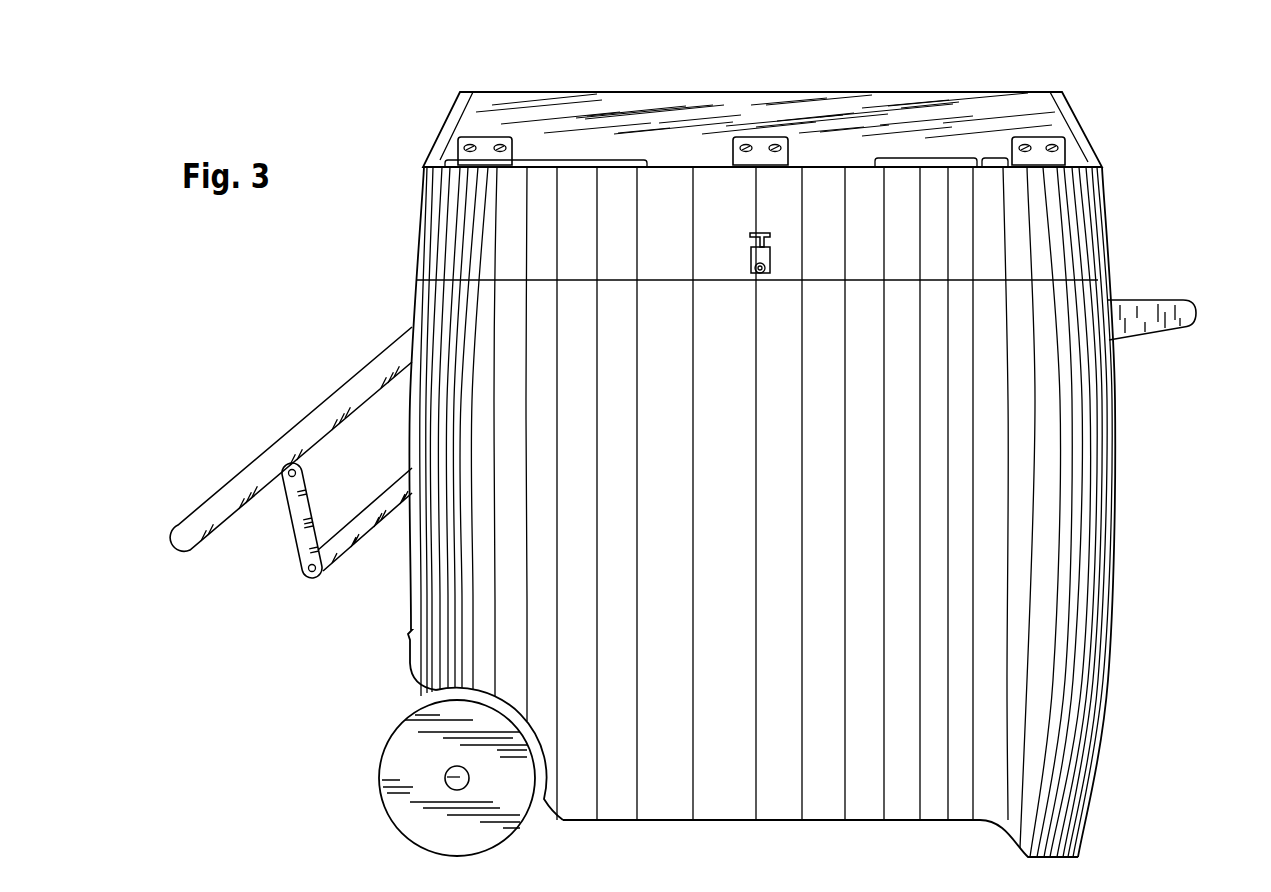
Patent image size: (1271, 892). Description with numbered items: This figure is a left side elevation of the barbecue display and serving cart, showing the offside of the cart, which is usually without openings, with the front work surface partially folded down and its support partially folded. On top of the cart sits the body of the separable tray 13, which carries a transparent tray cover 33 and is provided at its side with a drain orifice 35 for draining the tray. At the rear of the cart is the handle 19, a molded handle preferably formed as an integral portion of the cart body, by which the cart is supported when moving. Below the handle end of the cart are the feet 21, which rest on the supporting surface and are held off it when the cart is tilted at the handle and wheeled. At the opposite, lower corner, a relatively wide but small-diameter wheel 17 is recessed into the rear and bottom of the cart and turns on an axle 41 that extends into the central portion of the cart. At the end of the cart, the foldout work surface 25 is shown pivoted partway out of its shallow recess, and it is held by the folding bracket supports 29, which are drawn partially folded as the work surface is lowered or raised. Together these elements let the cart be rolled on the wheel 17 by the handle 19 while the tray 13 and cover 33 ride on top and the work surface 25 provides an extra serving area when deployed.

The transparent tray cover 33 is at (835, 87).
The body of the separable tray 13 is at (1098, 222).
The handle 19 is at (1150, 297).
The foldout work surface 25 is at (238, 482).
The folding bracket supports 29 is at (303, 572).
The drain orifice 35 is at (773, 261).
The wheel 17 is at (383, 748).
The axle 41 is at (447, 772).
The feet 21 is at (1057, 837).